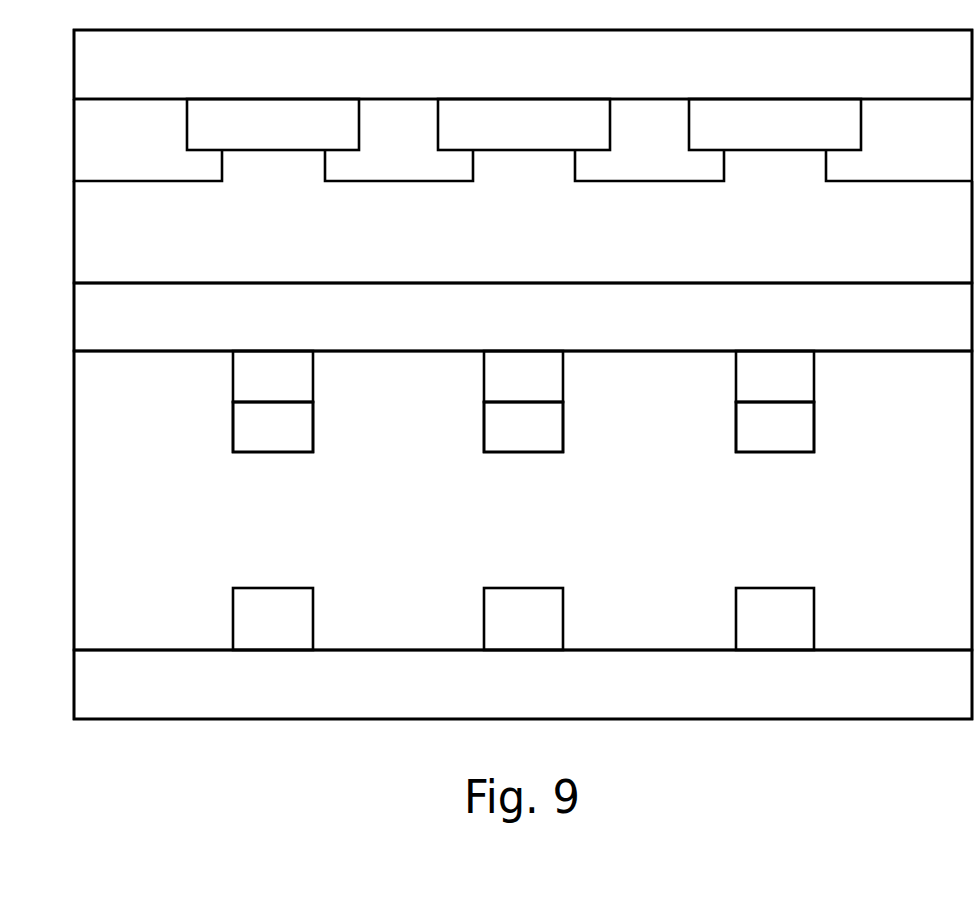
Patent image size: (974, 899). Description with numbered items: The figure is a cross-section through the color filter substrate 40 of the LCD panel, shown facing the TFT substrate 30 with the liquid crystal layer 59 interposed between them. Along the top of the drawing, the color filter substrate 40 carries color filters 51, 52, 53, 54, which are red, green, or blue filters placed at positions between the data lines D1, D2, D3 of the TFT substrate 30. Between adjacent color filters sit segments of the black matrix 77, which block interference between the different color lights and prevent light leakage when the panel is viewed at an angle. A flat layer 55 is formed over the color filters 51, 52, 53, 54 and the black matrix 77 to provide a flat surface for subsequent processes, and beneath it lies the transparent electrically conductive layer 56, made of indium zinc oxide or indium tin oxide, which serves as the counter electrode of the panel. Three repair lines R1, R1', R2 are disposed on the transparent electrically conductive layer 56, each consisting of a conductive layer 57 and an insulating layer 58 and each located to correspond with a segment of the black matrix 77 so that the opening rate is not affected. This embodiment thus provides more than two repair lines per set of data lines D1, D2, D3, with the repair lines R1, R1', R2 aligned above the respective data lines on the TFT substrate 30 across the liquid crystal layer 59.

The color filter substrate 40 is at (505, 78).
The color filter 51 is at (163, 160).
The color filter 52 is at (383, 160).
The color filter 53 is at (633, 160).
The color filter 54 is at (885, 160).
The black matrix 77 is at (252, 135).
The flat layer 55 is at (505, 249).
The transparent electrically conductive layer 56 is at (505, 324).
The conductive layer 57 is at (258, 440).
The insulating layer 58 is at (258, 389).
The liquid crystal layer 59 is at (619, 536).
The TFT substrate 30 is at (505, 696).
The repair line R1 is at (273, 470).
The repair line R1' is at (523, 470).
The repair line R2 is at (774, 452).
The data line D1 is at (273, 619).
The data line D2 is at (523, 619).
The data line D3 is at (775, 619).